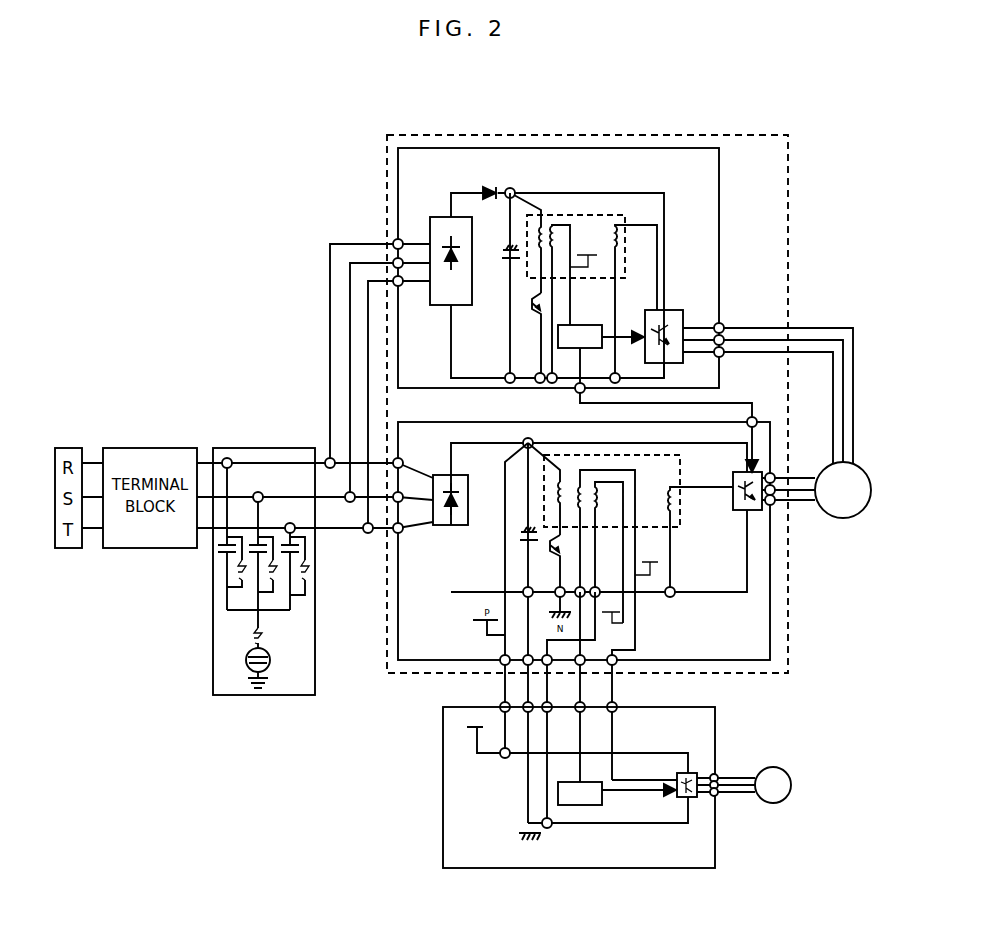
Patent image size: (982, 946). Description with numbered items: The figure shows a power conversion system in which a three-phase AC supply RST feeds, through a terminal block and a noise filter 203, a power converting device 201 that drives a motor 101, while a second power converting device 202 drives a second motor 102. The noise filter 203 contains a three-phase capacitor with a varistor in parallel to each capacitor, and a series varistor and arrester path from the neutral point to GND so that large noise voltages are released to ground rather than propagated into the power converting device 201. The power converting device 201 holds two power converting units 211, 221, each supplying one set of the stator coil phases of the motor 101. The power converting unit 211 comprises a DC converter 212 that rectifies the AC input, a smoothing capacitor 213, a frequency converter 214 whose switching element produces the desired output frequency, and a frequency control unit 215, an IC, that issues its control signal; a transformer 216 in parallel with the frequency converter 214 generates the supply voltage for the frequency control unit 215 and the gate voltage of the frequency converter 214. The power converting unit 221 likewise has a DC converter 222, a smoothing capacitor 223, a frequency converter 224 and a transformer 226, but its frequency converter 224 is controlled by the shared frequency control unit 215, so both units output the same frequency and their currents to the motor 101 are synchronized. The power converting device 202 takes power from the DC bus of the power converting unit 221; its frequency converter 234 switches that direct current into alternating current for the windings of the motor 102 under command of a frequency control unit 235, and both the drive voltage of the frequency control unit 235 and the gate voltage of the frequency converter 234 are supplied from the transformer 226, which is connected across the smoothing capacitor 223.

The motor 101 is at (842, 518).
The motor 102 is at (778, 803).
The power converting device 201 is at (388, 676).
The power converting device 202 is at (443, 775).
The noise filter 203 is at (213, 673).
The power converting unit 211 is at (398, 173).
The DC converter 212 is at (438, 305).
The smoothing capacitor 213 is at (506, 264).
The frequency converter 214 is at (654, 310).
The frequency control unit 215 is at (567, 325).
The transformer 216 is at (594, 214).
The power converting unit 221 is at (387, 615).
The DC converter 222 is at (438, 525).
The smoothing capacitor 223 is at (517, 541).
The frequency converter 224 is at (732, 500).
The transformer 226 is at (678, 527).
The frequency converter 234 is at (688, 772).
The frequency control unit 235 is at (603, 798).